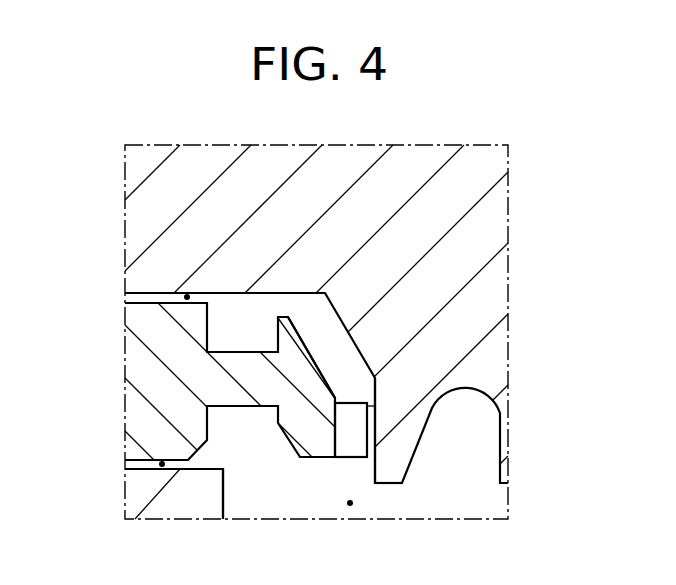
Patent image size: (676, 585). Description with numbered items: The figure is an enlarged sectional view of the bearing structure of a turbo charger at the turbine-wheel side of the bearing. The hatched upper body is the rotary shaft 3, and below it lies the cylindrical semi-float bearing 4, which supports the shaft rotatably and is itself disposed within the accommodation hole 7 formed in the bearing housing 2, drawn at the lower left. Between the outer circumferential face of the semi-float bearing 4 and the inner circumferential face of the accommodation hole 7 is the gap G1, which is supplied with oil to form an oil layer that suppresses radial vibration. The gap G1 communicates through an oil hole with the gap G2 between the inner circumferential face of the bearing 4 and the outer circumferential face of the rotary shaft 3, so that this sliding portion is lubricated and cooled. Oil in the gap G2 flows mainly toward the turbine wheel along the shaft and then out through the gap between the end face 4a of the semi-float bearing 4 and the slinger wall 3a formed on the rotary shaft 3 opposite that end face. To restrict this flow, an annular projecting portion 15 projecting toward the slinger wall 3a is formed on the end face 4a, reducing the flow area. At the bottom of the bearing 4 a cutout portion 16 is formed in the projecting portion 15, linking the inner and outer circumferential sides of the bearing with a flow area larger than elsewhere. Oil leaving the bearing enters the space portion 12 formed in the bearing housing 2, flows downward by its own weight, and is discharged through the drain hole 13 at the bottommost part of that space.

The bearing housing 2 is at (138, 502).
The rotary shaft 3 is at (138, 247).
The slinger wall 3a is at (375, 483).
The semi-float bearing 4 is at (142, 387).
The end face 4a is at (338, 400).
The accommodation hole 7 is at (133, 463).
The space portion 12 is at (350, 507).
The drain hole 13 is at (223, 502).
The projecting portion 15 is at (380, 409).
The cutout portion 16 is at (348, 452).
The gap G1 is at (162, 468).
The gap G2 is at (187, 294).